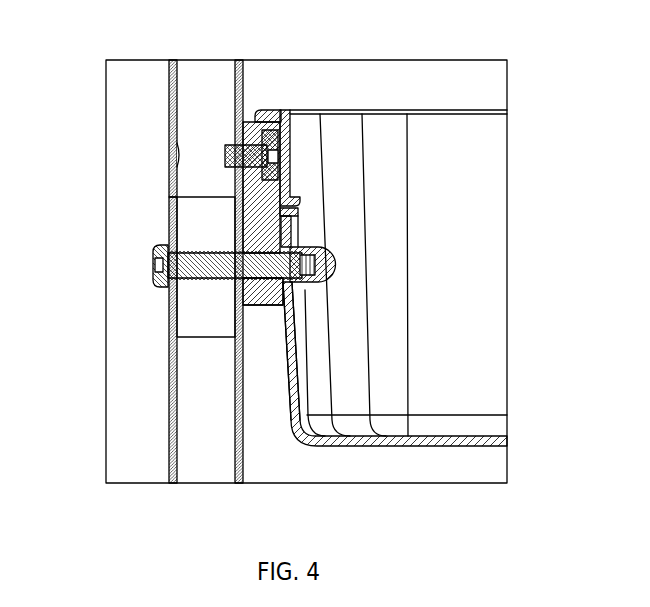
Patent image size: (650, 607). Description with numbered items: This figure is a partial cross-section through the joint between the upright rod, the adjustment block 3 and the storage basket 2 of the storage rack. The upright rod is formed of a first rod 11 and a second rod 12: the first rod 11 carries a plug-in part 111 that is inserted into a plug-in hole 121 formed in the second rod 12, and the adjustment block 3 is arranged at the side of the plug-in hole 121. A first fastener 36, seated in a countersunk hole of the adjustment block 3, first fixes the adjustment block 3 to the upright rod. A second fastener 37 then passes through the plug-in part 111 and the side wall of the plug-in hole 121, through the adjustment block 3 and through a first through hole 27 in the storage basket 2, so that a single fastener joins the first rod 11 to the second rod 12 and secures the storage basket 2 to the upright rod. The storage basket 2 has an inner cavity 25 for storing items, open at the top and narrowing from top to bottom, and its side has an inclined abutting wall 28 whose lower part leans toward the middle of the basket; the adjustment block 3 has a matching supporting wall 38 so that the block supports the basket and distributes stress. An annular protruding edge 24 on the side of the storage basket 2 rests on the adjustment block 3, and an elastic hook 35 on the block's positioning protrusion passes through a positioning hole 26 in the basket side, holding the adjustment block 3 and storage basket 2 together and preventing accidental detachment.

The storage basket 2 is at (450, 440).
The adjustment block 3 is at (257, 236).
The first rod 11 is at (172, 406).
The second rod 12 is at (172, 118).
The plug-in hole 121 is at (186, 186).
The plug-in part 111 is at (173, 315).
The protruding edge 24 is at (266, 111).
The inner cavity 25 is at (452, 264).
The positioning hole 26 is at (286, 192).
The first through hole 27 is at (300, 287).
The abutting wall 28 is at (286, 388).
The elastic hook 35 is at (299, 214).
The first fastener 36 is at (235, 152).
The second fastener 37 is at (172, 263).
The supporting wall 38 is at (282, 290).